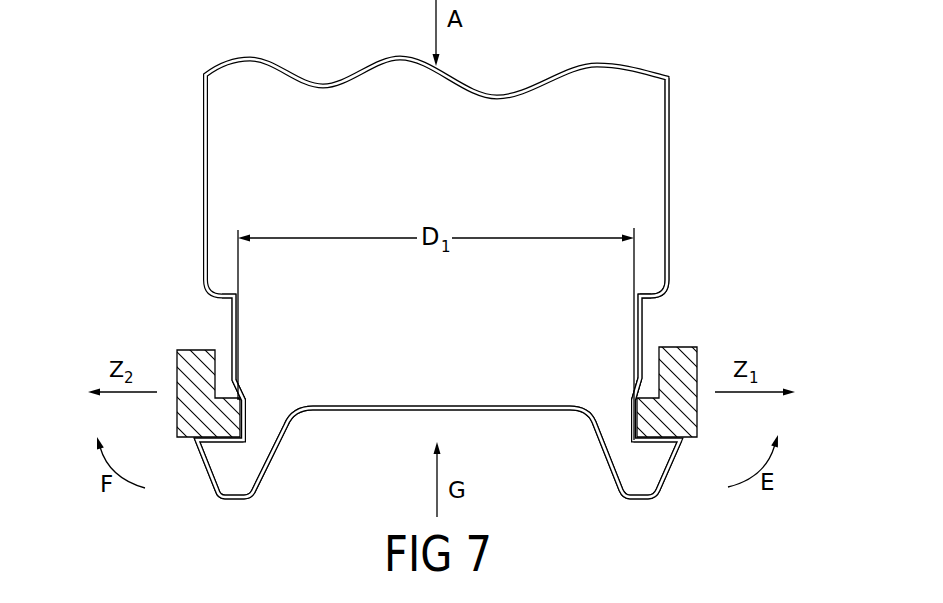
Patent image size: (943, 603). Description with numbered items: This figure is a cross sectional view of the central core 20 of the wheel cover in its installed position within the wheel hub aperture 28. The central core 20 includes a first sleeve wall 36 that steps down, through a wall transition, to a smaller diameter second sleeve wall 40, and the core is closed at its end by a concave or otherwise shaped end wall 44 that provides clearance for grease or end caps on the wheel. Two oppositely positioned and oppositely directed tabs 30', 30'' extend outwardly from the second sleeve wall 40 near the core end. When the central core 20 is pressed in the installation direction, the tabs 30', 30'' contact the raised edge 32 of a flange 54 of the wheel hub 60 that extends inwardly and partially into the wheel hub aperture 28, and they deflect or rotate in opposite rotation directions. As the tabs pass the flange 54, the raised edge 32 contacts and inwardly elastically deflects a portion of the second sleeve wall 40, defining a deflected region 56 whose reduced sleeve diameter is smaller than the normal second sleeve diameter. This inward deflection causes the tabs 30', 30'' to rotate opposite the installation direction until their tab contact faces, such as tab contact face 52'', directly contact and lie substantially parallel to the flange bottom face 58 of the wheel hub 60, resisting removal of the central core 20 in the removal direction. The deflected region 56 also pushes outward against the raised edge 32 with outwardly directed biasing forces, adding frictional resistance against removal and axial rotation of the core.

The central core 20 is at (429, 285).
The wheel hub aperture 28 is at (225, 365).
The tab 30' is at (625, 479).
The tab 30'' is at (260, 478).
The raised edge 32 is at (622, 415).
The first sleeve wall 36 is at (669, 178).
The second sleeve wall 40 is at (642, 333).
The end wall 44 is at (451, 412).
The tab contact face 52'' is at (192, 483).
The flange 54 is at (243, 400).
The deflected region 56 is at (252, 398).
The flange bottom face 58 is at (692, 447).
The wheel hub 60 is at (674, 372).